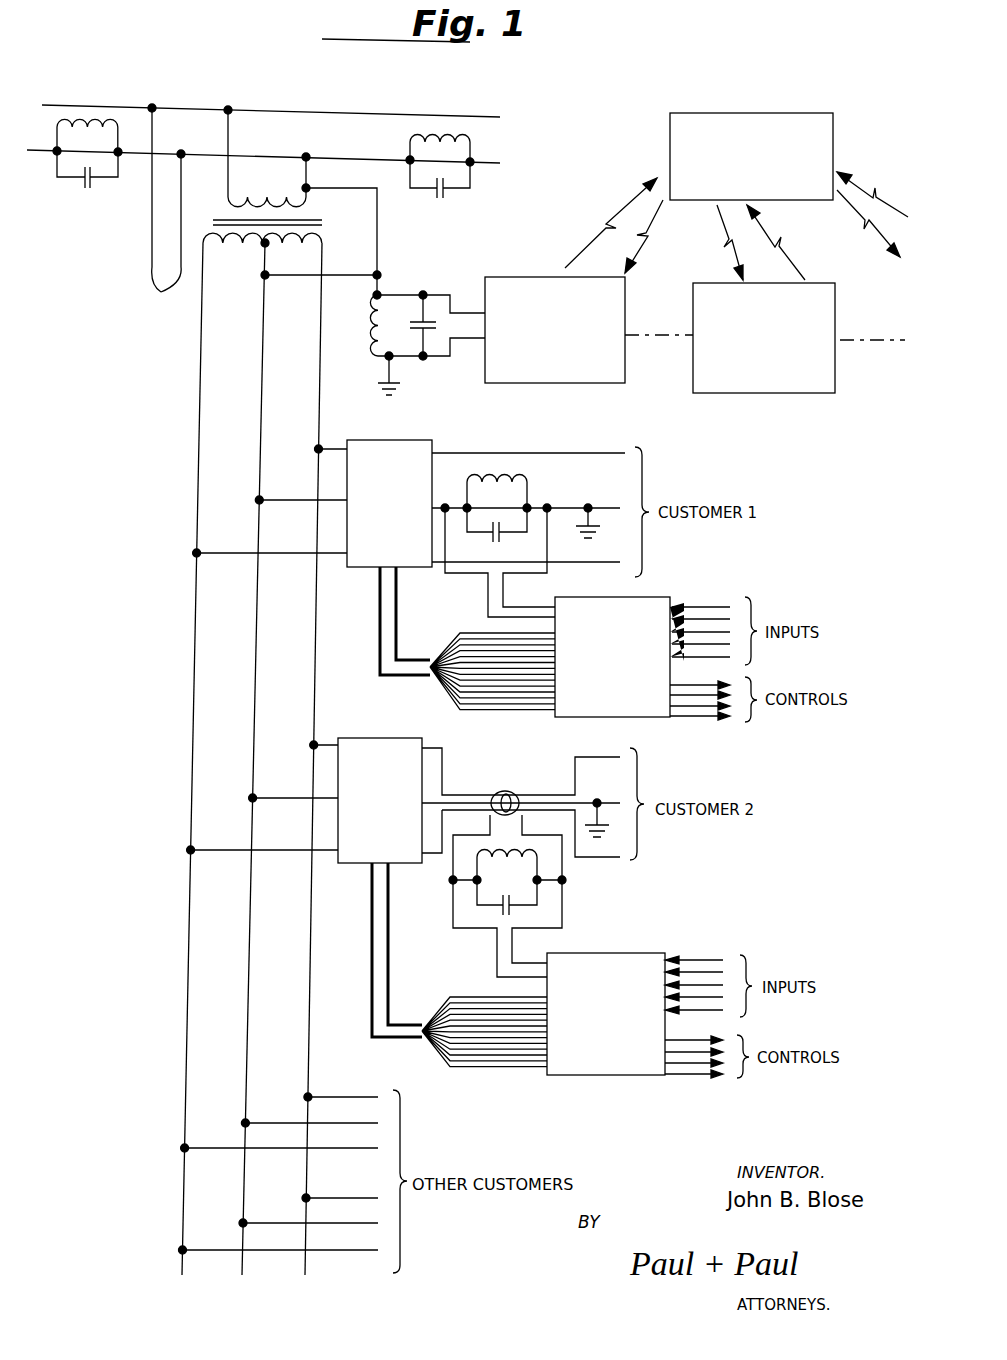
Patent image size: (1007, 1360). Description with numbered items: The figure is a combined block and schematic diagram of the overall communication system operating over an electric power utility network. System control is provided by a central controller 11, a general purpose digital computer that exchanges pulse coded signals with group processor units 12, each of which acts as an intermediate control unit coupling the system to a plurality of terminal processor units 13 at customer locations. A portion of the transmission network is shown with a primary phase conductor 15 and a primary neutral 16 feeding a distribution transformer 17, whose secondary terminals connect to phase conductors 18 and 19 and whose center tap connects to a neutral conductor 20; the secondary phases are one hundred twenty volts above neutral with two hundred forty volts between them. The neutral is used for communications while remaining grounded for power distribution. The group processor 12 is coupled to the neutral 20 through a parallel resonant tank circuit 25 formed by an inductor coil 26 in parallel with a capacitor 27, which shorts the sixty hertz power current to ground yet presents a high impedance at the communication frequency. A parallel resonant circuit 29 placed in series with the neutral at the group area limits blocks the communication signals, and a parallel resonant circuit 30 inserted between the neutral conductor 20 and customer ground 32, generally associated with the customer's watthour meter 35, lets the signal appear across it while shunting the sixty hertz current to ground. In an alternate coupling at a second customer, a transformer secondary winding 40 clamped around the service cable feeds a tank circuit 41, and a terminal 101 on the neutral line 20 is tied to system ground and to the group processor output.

The central controller 11 is at (685, 158).
The group processor unit 12 is at (551, 372).
The terminal processor unit 13 is at (657, 603).
The primary phase conductor 15 is at (308, 106).
The primary neutral 16 is at (296, 158).
The distribution transformer 17 is at (316, 220).
The secondary phase conductor 18 is at (202, 340).
The secondary phase conductor 19 is at (323, 345).
The neutral conductor 20 is at (265, 340).
The parallel resonant tank circuit 25 is at (373, 291).
The inductor coil 26 is at (366, 318).
The capacitor 27 is at (437, 325).
The parallel resonant circuit 29 is at (80, 150).
The parallel resonant circuit 30 is at (517, 492).
The customer ground 32 is at (590, 506).
The watthour meter 35 is at (412, 452).
The transformer secondary winding 40 is at (510, 790).
The tank circuit 41 is at (527, 900).
The terminal 101 is at (150, 211).